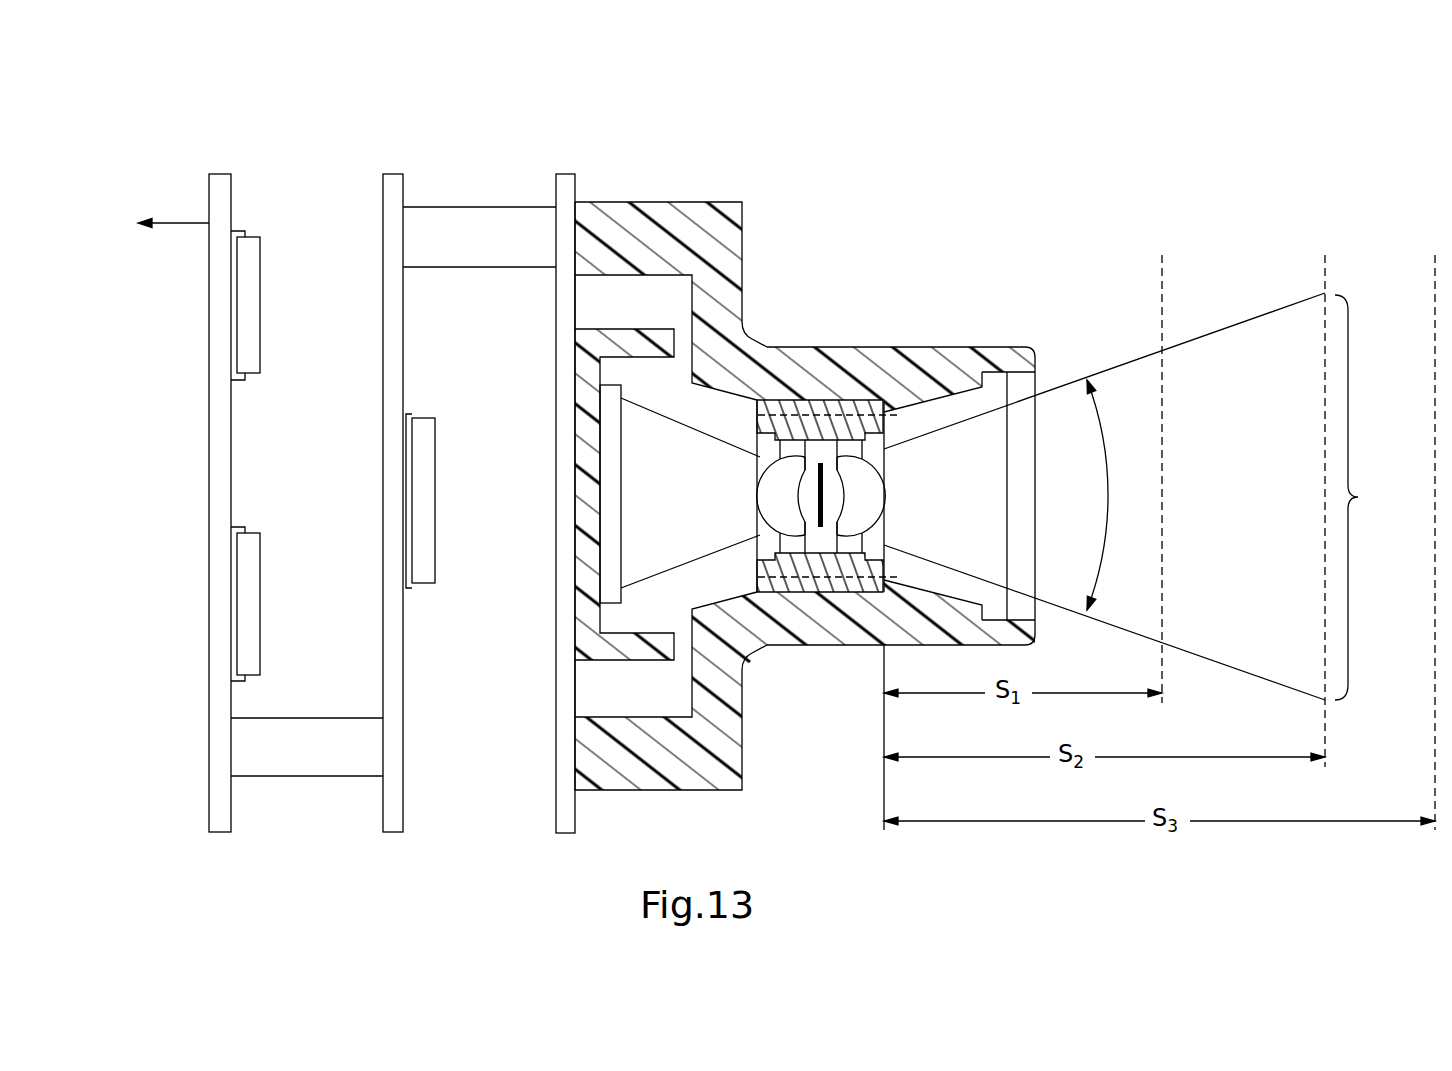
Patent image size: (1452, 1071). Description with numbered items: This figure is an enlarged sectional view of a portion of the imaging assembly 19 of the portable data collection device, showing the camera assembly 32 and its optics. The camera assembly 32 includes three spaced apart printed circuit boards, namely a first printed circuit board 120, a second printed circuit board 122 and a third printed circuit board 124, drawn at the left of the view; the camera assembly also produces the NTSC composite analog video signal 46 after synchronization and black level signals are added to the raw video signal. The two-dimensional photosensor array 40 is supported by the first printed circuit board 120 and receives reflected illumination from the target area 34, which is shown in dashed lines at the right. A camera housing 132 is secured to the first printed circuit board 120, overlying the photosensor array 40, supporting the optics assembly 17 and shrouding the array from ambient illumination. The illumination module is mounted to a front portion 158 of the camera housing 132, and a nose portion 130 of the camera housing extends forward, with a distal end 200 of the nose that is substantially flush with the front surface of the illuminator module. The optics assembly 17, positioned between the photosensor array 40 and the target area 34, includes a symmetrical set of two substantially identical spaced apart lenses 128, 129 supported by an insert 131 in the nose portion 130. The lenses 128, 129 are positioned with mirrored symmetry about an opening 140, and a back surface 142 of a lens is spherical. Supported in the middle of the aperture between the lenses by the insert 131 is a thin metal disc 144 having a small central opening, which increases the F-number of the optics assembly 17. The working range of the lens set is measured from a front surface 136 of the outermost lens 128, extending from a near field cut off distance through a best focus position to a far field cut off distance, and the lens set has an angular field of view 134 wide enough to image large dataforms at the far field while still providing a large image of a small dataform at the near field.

The third printed circuit board 124 is at (220, 173).
The second printed circuit board 122 is at (393, 173).
The first printed circuit board 120 is at (565, 173).
The NTSC composite analog video signal 46 is at (183, 226).
The camera assembly 32 is at (482, 105).
The imaging assembly 19 is at (779, 118).
The front portion of the camera housing 158 is at (743, 242).
The nose portion of the camera housing 130 is at (775, 365).
The distal end of the camera housing nose 200 is at (1020, 433).
The insert 131 is at (858, 423).
The camera housing 132 is at (878, 320).
The lens 129 is at (781, 484).
The outermost lens 128 is at (862, 508).
The back surface of the lens 142 is at (822, 465).
The opening 140 is at (810, 490).
The thin metal disc 144 is at (813, 520).
The front surface of the outermost lens 136 is at (885, 490).
The 2D photosensor array 40 is at (620, 550).
The optics assembly 17 is at (937, 497).
The angular field of view 134 is at (1102, 438).
The target area 34 is at (1366, 497).